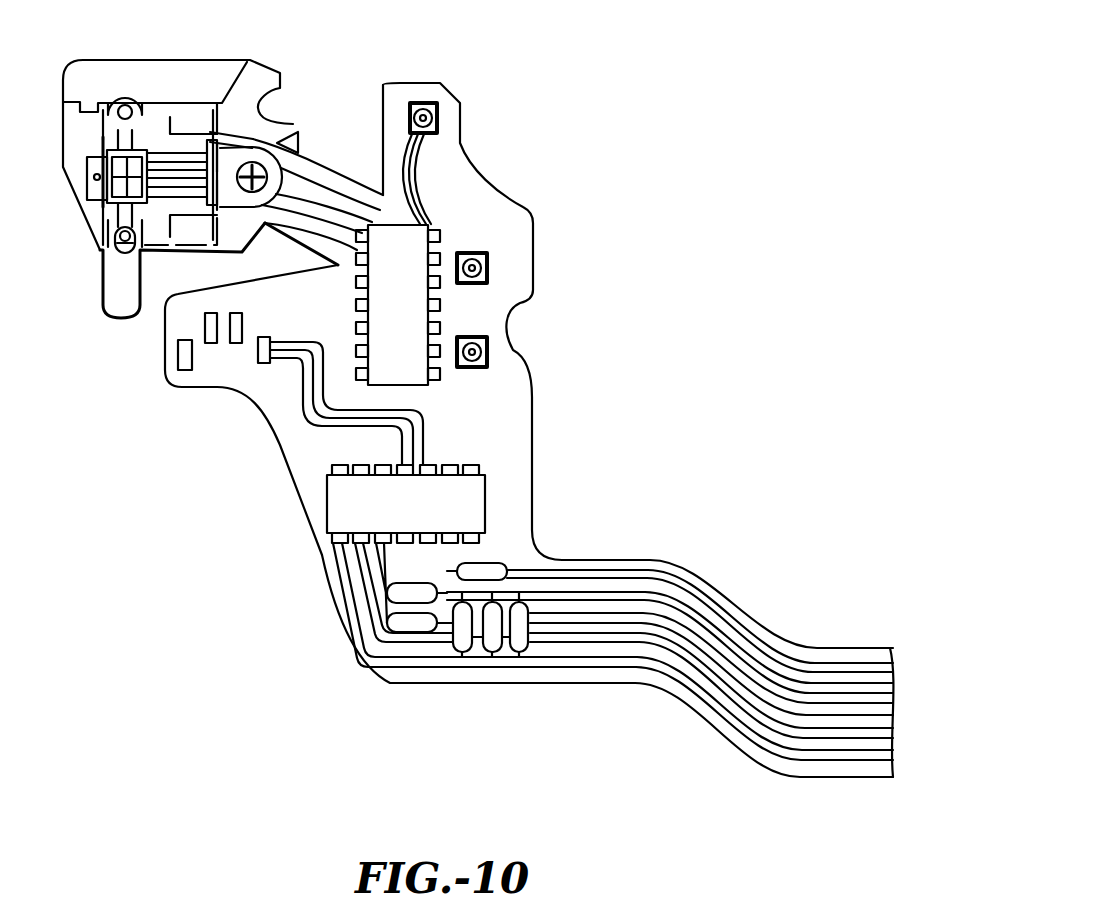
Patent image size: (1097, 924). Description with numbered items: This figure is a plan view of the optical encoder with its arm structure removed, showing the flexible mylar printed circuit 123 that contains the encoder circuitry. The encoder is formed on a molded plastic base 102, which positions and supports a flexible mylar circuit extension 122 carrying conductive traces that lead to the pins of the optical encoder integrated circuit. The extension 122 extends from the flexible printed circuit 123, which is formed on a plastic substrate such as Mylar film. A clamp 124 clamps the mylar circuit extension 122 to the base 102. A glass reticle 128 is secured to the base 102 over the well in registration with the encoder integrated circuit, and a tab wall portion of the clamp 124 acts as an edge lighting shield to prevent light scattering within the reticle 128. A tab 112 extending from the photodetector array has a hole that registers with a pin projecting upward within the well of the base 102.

The molded plastic base 102 is at (92, 227).
The tab 112 is at (92, 197).
The glass reticle 128 is at (160, 122).
The clamp 124 is at (262, 152).
The flexible mylar circuit extension 122 is at (298, 232).
The flexible printed circuit 123 is at (270, 423).